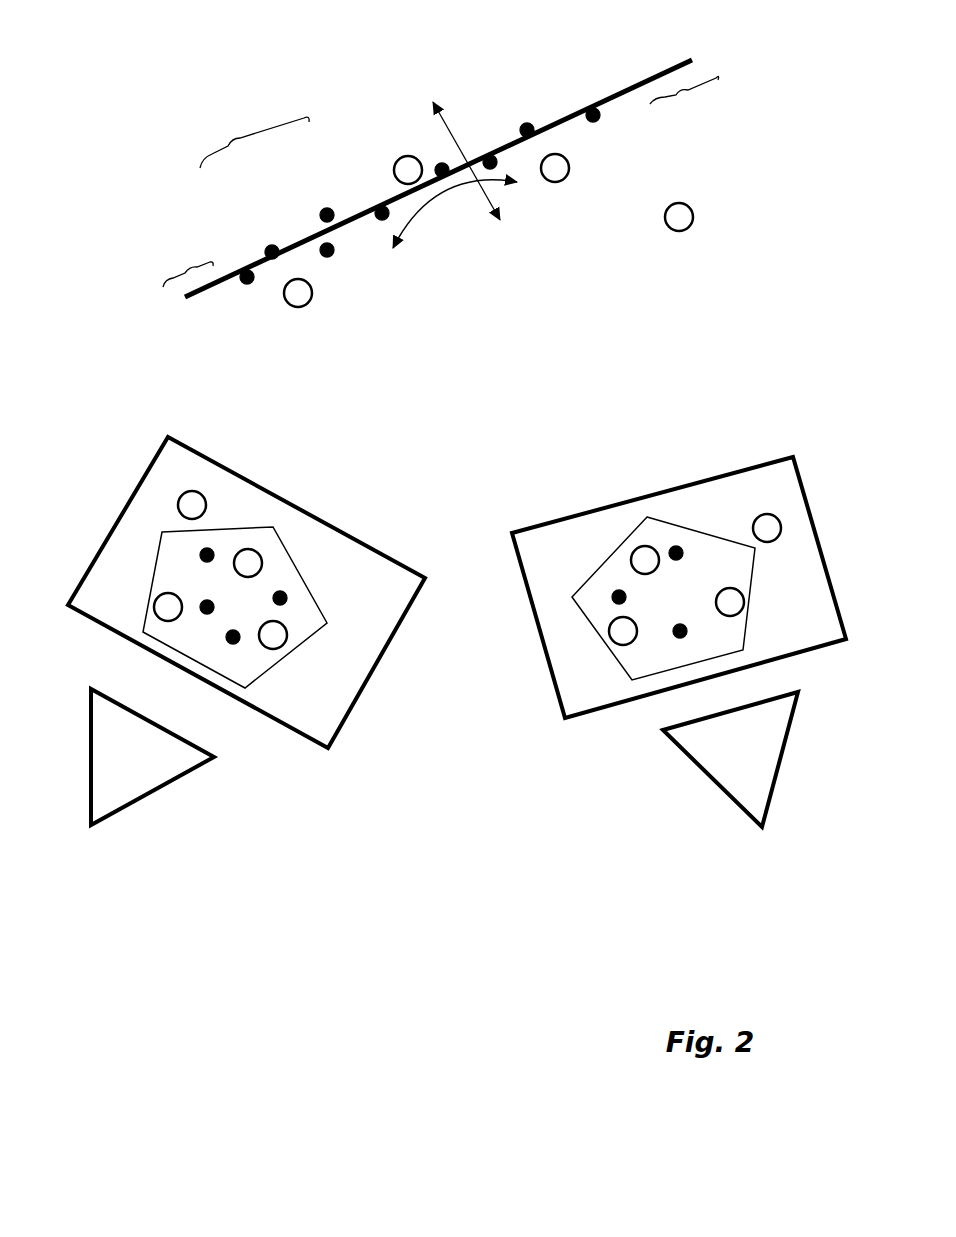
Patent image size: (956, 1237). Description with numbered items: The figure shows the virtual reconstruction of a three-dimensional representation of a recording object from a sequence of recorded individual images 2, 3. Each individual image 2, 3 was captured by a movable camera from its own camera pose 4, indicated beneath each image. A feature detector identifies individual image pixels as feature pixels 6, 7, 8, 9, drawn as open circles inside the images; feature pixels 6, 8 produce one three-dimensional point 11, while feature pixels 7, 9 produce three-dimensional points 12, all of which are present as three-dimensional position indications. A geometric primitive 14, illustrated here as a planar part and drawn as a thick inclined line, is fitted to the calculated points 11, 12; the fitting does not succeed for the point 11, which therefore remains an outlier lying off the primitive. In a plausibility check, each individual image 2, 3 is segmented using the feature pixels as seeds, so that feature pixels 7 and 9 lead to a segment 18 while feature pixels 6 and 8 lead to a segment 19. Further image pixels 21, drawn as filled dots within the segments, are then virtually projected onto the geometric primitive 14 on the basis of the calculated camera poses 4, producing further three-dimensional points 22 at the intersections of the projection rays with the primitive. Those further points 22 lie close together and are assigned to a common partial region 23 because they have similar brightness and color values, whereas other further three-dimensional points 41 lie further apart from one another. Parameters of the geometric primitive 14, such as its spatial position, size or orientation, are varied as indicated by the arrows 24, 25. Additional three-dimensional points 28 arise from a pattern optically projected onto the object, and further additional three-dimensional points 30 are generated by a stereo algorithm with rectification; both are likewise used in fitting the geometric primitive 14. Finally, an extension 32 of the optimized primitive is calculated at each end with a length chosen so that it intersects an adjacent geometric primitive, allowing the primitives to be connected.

The individual image 2 is at (118, 523).
The individual image 3 is at (808, 497).
The camera pose 4 is at (122, 806).
The feature pixel 6 is at (203, 488).
The feature pixel 7 is at (265, 545).
The feature pixel 8 is at (758, 512).
The feature pixel 9 is at (648, 543).
The 3D point 11 is at (692, 233).
The 3D point 12 is at (313, 303).
The geometric primitive 14 is at (630, 88).
The segment 18 is at (287, 570).
The segment 19 is at (363, 578).
The further image pixel 21 is at (210, 548).
The further 3D point 22 is at (270, 250).
The partial region 23 is at (254, 132).
The arrow 24 is at (447, 190).
The arrow 25 is at (478, 200).
The 3D point 28 is at (328, 252).
The further additional 3D point 30 is at (593, 113).
The extension 32 is at (430, 181).
The further 3D point 41 is at (442, 168).